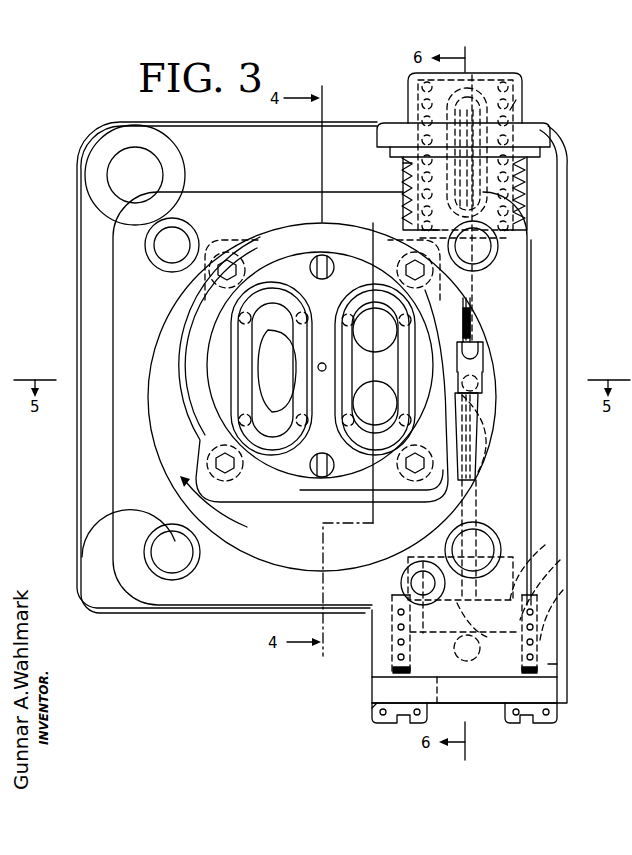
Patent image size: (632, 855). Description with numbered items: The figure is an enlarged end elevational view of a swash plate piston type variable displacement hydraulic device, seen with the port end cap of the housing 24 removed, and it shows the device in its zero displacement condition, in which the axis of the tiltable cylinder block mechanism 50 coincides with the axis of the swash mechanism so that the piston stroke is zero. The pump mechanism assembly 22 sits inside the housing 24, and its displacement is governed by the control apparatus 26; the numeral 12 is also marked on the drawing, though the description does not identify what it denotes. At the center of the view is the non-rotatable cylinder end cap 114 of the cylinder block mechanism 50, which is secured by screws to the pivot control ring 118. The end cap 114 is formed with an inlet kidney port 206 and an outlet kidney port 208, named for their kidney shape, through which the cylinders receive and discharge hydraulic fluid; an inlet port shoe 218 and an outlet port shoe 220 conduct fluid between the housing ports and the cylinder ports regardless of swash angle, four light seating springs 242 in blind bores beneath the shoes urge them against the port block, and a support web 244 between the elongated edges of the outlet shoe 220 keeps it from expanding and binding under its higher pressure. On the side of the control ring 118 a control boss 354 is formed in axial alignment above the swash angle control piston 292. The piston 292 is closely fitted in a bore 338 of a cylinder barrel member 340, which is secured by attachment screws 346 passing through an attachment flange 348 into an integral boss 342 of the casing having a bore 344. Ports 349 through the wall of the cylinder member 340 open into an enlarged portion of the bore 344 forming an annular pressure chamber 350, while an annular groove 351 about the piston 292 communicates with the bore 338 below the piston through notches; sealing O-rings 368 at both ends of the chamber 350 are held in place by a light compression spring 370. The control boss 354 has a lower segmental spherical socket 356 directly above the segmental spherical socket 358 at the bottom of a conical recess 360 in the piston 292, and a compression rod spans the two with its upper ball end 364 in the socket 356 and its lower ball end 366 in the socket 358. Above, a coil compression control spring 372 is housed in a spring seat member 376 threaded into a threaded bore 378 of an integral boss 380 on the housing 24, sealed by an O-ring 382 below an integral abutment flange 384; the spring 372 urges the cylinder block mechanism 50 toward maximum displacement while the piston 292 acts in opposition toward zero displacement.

The pump 12 is at (243, 272).
The variable displacement pump mechanism assembly 22 is at (166, 452).
The housing 24 is at (220, 186).
The control apparatus 26 is at (512, 110).
The tiltable cylinder block mechanism 50 is at (226, 510).
The cylinder end cap 114 is at (183, 334).
The pivot control ring 118 is at (485, 354).
The inlet kidney port 206 is at (271, 347).
The outlet kidney port 208 is at (193, 355).
The inlet port shoe 218 is at (247, 382).
The outlet port shoe 220 is at (366, 369).
The seating springs 242 is at (349, 302).
The support web 244 is at (300, 432).
The swash angle control piston 292 is at (557, 701).
The bore 338 is at (438, 703).
The cylinder barrel member 340 is at (537, 647).
The integral boss 342 is at (550, 617).
The bore 344 is at (547, 545).
The attachment screws 346 is at (387, 723).
The attachment flange 348 is at (380, 680).
The ports 349 is at (372, 709).
The annular pressure chamber 350 is at (563, 590).
The annular groove 351 is at (424, 547).
The control boss 354 is at (481, 381).
The lower segmental spherical socket 356 is at (488, 430).
The segmental spherical socket 358 is at (389, 640).
The conical recess 360 is at (482, 540).
The upper ball end 364 is at (480, 460).
The lower ball end 366 is at (401, 587).
The sealing O-rings 368 is at (390, 630).
The light compression spring 370 is at (560, 562).
The control spring 372 is at (513, 92).
The spring seat member 376 is at (486, 65).
The threaded bore 378 is at (520, 192).
The integral boss 380 is at (540, 177).
The sealing O-ring 382 is at (401, 164).
The abutment flange 384 is at (530, 131).